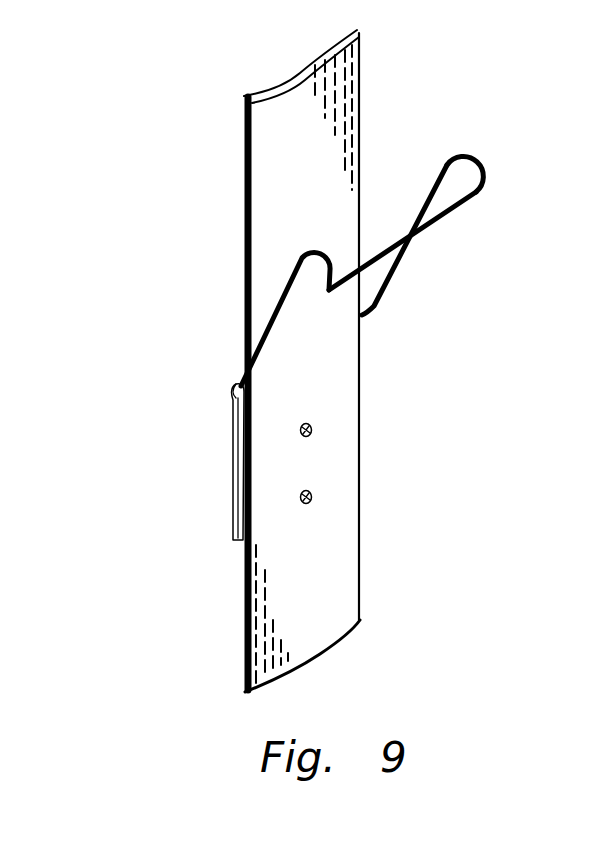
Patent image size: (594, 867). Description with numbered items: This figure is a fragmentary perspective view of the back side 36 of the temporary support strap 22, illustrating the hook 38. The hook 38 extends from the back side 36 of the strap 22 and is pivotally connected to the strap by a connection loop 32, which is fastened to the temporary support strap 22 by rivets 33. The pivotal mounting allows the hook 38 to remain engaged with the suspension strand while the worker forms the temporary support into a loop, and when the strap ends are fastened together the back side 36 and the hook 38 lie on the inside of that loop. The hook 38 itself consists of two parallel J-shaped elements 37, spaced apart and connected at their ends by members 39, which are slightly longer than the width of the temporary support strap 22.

The temporary support strap 22 is at (216, 212).
The connection loop 32 is at (238, 464).
The rivets 33 is at (316, 424).
The back side 36 is at (338, 590).
The J-shaped elements 37 is at (432, 183).
The hook 38 is at (478, 160).
The members 39 is at (455, 213).